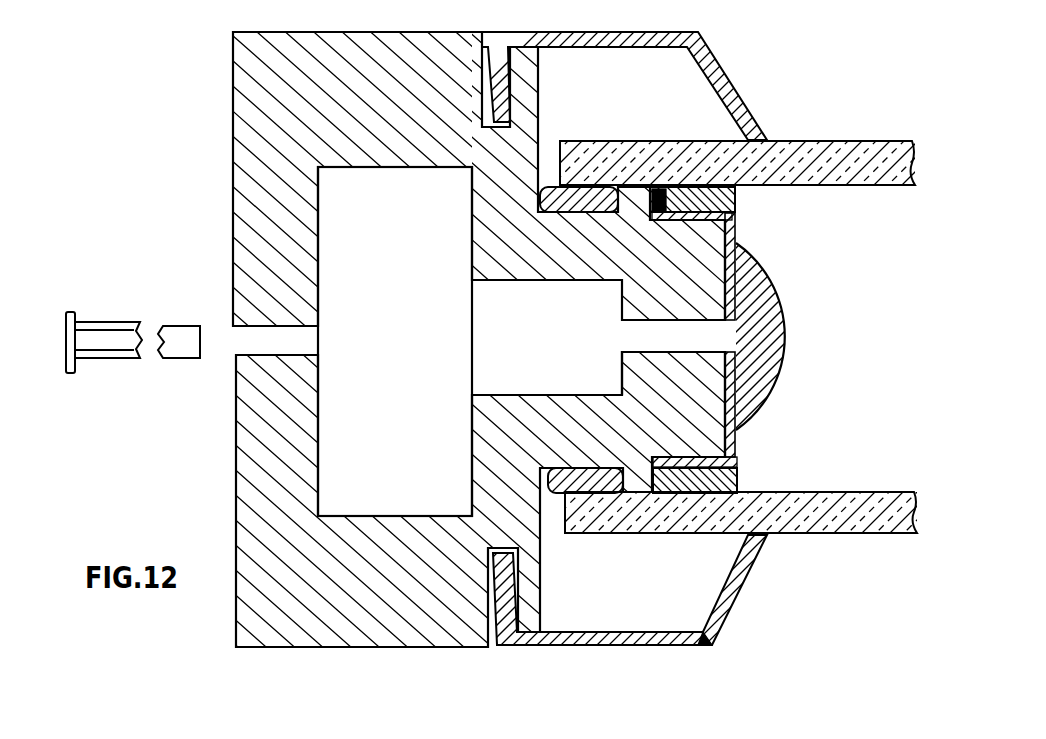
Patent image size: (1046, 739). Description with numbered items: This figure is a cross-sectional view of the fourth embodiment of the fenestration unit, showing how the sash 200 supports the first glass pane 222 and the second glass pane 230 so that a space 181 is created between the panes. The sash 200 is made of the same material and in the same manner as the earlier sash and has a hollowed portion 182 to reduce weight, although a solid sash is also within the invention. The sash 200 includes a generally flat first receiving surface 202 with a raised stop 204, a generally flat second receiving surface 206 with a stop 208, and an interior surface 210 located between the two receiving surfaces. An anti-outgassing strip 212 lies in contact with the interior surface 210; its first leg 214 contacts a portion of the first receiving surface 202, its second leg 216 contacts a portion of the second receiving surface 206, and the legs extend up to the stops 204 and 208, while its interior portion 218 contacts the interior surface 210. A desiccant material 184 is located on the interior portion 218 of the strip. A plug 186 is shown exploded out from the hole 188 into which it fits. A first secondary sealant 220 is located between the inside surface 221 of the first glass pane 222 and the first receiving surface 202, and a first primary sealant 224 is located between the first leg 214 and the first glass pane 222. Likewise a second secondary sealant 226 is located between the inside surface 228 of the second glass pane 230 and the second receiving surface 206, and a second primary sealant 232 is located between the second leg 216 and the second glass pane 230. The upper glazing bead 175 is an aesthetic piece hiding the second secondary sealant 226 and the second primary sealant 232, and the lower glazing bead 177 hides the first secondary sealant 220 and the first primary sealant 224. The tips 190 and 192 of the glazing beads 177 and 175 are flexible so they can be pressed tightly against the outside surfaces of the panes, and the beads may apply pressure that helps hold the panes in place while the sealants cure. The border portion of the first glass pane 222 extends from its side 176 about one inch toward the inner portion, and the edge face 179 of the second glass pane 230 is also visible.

The upper glazing bead 175 is at (633, 175).
The side of the first glass pane 176 is at (562, 533).
The lower glazing bead 177 is at (708, 645).
The upper plate end face 179 is at (558, 150).
The space 181 is at (882, 376).
The hollowed portion 182 is at (412, 237).
The desiccant material 184 is at (775, 338).
The plug 186 is at (113, 358).
The hole 188 is at (255, 340).
The tip of the lower glazing bead 190 is at (757, 536).
The tip of the upper glazing bead 192 is at (761, 138).
The sash 200 is at (374, 42).
The first receiving surface 202 is at (534, 470).
The stop 204 is at (645, 492).
The second receiving surface 206 is at (540, 196).
The stop 208 is at (628, 190).
The interior surface 210 is at (725, 289).
The anti-outgassing strip 212 is at (737, 249).
The first leg 214 is at (693, 457).
The second leg 216 is at (698, 222).
The interior portion 218 is at (730, 373).
The first secondary sealant 220 is at (603, 468).
The inside surface of the first glass pane 221 is at (860, 494).
The first glass pane 222 is at (880, 533).
The first primary sealant 224 is at (737, 469).
The second secondary sealant 226 is at (573, 216).
The inside surface of the second glass pane 228 is at (858, 185).
The second glass pane 230 is at (875, 147).
The second primary sealant 232 is at (742, 198).